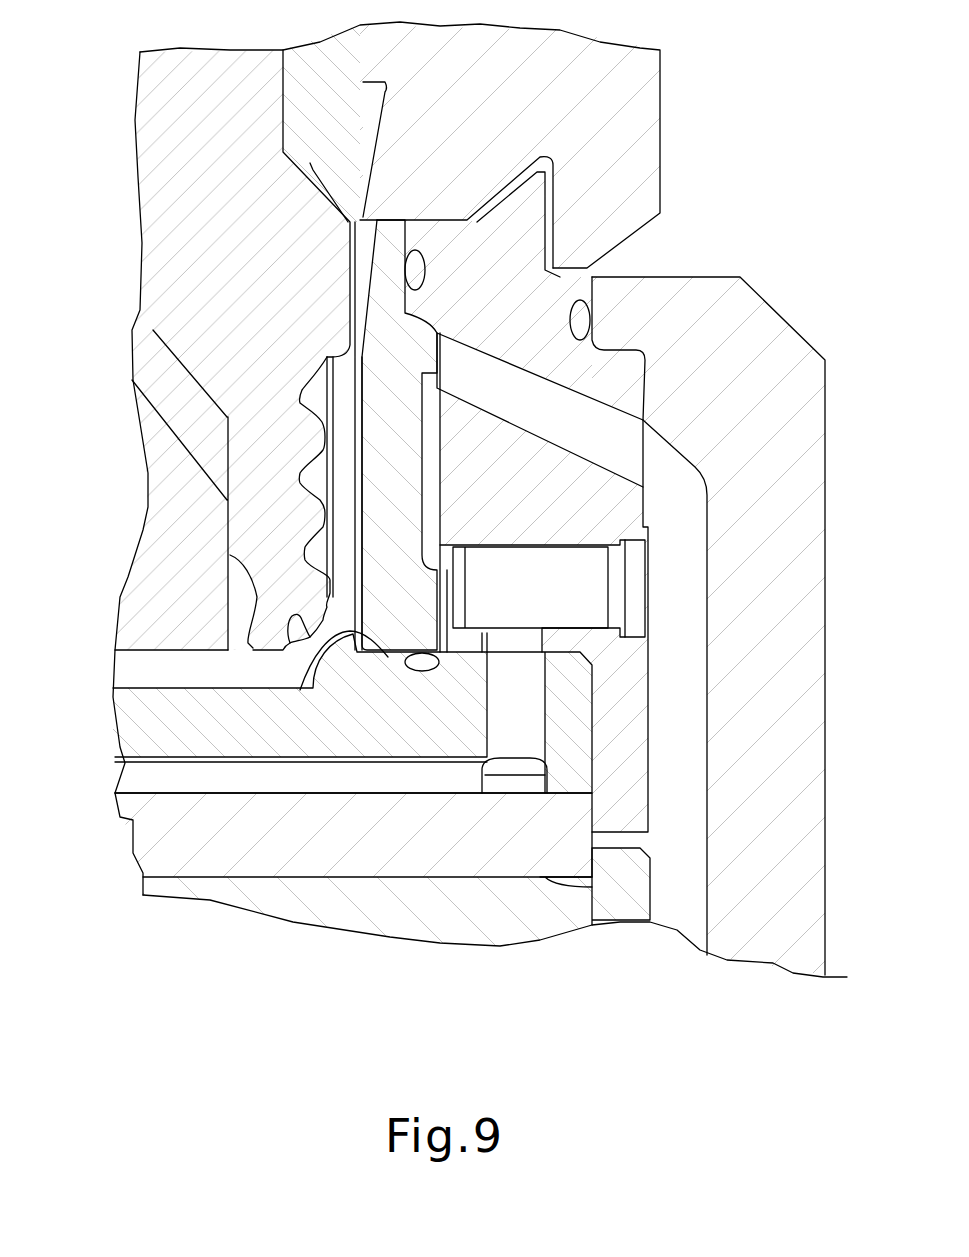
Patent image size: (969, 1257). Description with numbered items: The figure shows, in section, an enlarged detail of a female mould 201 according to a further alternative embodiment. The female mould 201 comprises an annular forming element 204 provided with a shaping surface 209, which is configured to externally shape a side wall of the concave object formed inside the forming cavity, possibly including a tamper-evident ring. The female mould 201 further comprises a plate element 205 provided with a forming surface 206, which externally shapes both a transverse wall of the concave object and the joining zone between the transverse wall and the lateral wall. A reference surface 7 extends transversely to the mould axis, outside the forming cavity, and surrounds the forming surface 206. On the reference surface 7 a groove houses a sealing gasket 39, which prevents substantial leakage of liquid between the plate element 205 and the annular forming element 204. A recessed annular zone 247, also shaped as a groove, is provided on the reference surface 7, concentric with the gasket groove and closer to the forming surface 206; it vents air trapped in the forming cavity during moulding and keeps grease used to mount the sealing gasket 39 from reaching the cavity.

The female mould 201 is at (758, 186).
The shaping surface 209 is at (360, 408).
The annular forming element 204 is at (388, 462).
The forming surface 206 is at (143, 688).
The plate element 205 is at (143, 718).
The recessed annular zone 247 is at (348, 633).
The sealing gasket 39 is at (422, 663).
The reference surface 7 is at (458, 652).